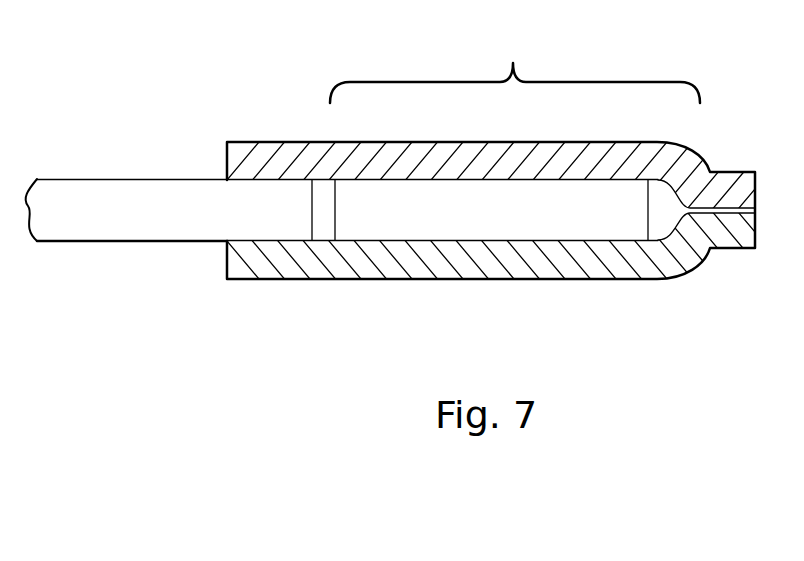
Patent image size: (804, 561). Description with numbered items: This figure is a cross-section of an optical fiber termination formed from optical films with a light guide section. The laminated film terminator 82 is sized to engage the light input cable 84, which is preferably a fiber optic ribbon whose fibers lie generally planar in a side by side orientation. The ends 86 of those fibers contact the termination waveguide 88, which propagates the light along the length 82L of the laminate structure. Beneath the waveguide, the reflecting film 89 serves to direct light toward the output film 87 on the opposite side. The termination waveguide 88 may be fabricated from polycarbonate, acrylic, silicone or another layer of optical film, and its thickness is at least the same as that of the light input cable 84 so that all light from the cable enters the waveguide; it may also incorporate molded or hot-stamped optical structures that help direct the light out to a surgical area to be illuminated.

The laminated film terminator 82 is at (256, 88).
The length of the laminate structure 82L is at (515, 68).
The light input cable 84 is at (97, 227).
The ends of the fibers 86 is at (290, 208).
The output film 87 is at (445, 150).
The termination waveguide 88 is at (550, 230).
The reflecting film 89 is at (275, 270).